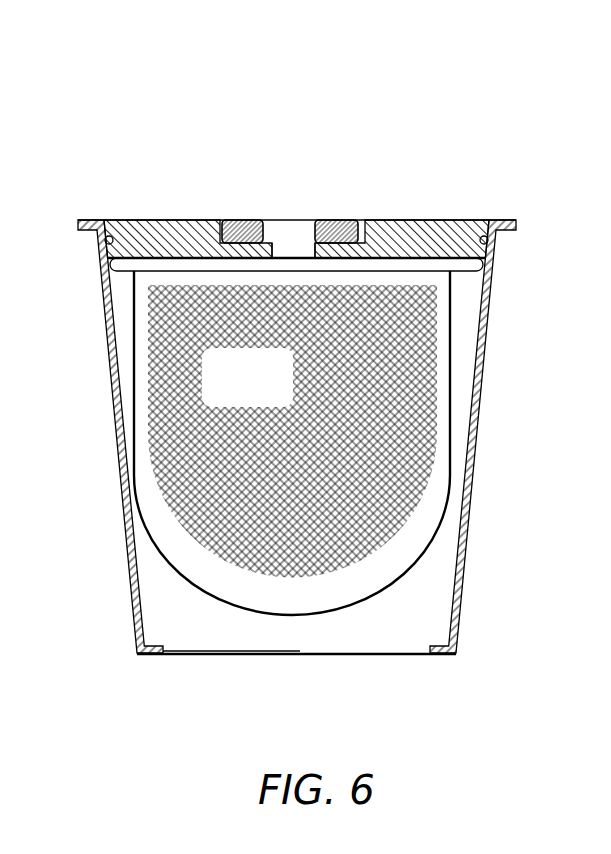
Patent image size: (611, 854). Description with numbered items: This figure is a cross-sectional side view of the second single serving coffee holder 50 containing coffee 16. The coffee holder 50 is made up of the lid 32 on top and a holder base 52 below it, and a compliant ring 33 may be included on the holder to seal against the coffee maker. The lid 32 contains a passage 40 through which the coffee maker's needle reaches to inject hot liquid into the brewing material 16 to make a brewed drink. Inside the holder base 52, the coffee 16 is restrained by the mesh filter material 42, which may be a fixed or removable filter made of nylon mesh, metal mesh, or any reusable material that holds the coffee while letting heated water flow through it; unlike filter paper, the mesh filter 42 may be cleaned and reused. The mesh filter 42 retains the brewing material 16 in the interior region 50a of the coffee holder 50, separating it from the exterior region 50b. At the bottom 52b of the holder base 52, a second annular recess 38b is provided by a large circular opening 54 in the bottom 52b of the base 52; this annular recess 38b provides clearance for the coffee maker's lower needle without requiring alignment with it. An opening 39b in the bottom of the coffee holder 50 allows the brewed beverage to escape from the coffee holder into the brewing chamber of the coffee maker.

The second single serving coffee holder 50 is at (127, 171).
The lid 32 is at (437, 235).
The compliant ring 33 is at (228, 232).
The passage 40 is at (300, 250).
The coffee 16 is at (292, 431).
The interior region 50a is at (292, 488).
The exterior region 50b is at (332, 478).
The holder base 52 is at (477, 438).
The bottom 52b is at (479, 605).
The large circular opening 54 is at (300, 657).
The mesh filter material 42 is at (370, 601).
The second annular recess 38b is at (197, 628).
The opening 39b is at (243, 628).